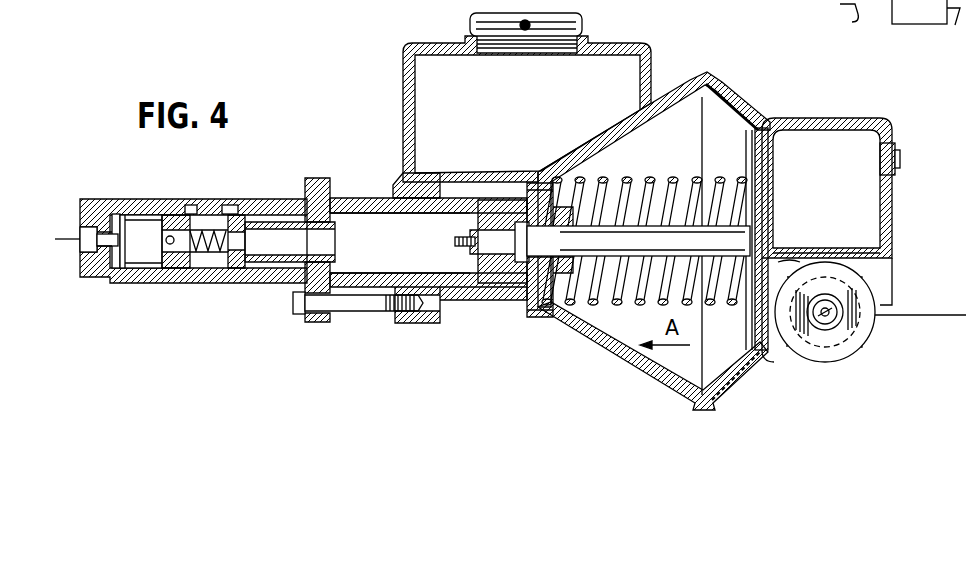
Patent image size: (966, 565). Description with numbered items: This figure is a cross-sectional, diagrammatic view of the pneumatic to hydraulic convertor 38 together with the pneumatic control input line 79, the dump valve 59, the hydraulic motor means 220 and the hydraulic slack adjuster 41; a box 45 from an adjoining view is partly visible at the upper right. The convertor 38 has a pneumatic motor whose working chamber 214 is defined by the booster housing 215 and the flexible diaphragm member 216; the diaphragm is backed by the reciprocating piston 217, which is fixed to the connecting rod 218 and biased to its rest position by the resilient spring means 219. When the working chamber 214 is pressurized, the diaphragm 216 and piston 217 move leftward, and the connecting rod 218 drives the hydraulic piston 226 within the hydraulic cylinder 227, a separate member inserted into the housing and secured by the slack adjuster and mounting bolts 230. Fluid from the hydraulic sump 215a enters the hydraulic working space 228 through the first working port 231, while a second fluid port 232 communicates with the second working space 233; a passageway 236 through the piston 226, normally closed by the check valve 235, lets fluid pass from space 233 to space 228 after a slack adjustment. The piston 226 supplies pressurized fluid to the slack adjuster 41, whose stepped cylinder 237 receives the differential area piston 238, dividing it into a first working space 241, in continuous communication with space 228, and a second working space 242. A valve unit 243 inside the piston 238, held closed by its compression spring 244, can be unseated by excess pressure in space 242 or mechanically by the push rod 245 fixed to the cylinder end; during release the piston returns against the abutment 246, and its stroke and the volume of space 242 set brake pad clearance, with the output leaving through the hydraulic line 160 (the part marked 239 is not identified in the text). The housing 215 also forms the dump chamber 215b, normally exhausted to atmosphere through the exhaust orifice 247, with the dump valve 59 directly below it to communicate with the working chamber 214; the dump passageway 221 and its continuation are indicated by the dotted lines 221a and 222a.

The hydraulic slack adjuster 41 is at (229, 339).
The hydraulic line 160 is at (67, 239).
The working space 242 is at (156, 260).
The push rod 245 is at (100, 247).
The sleeve 239 is at (167, 252).
The valve unit 243 is at (171, 232).
The compression spring 244 is at (190, 262).
The abutment 246 is at (252, 275).
The stepped cylinder 237 is at (183, 207).
The differential area reciprocal piston means 238 is at (226, 205).
The working space 241 is at (308, 256).
The hydraulic cylinder 227 is at (372, 198).
The mounting bolts 230 is at (367, 312).
The hydraulic motor means 220 is at (476, 335).
The hydraulic working space 228 is at (396, 265).
The first working port 231 is at (478, 198).
The passageway 236 is at (498, 215).
The check valve 235 is at (458, 244).
The hydraulic piston 226 is at (520, 285).
The second fluid port 232 is at (507, 235).
The second working space 233 is at (547, 318).
The pneumatic to hydraulic convertor 38 is at (581, 393).
The working chamber 214 is at (766, 125).
The flexible diaphragm member 216 is at (735, 362).
The reciprocating piston 217 is at (746, 149).
The resilient spring means 219 is at (640, 232).
The reciprocating connecting rod 218 is at (645, 178).
The booster housing 215 is at (648, 80).
The hydraulic sump 215a is at (529, 121).
The dump chamber 215b is at (854, 175).
The exhaust orifice 247 is at (900, 160).
The dump passageway 221 is at (850, 252).
The dotted lines 221a is at (880, 282).
The dump valve 59 is at (862, 328).
The dotted lines 222a is at (787, 365).
The pneumatic control input line 79 is at (943, 305).
The control unit 45 is at (919, 12).